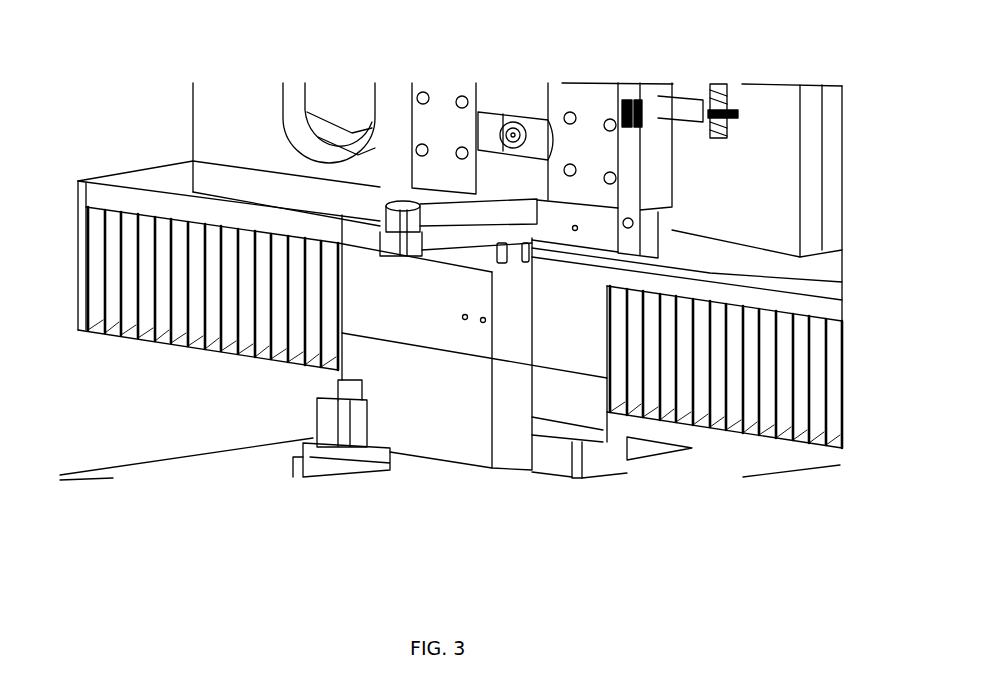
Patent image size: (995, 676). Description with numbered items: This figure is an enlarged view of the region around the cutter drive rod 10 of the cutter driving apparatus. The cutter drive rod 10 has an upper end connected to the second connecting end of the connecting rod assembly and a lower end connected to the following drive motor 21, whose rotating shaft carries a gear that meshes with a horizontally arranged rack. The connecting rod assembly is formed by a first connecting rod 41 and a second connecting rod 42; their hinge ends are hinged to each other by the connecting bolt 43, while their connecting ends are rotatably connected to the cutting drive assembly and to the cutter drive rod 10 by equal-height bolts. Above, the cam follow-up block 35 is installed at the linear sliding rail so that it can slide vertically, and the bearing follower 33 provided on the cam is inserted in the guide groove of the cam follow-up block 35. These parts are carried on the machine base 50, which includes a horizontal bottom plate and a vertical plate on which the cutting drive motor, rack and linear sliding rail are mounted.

The cutter drive rod 10 is at (503, 410).
The following drive motor 21 is at (378, 288).
The bearing follower 33 is at (530, 125).
The cam follow-up block 35 is at (582, 140).
The first connecting rod 41 is at (478, 215).
The second connecting rod 42 is at (460, 240).
The connecting bolt 43 is at (395, 200).
The machine base 50 is at (720, 258).